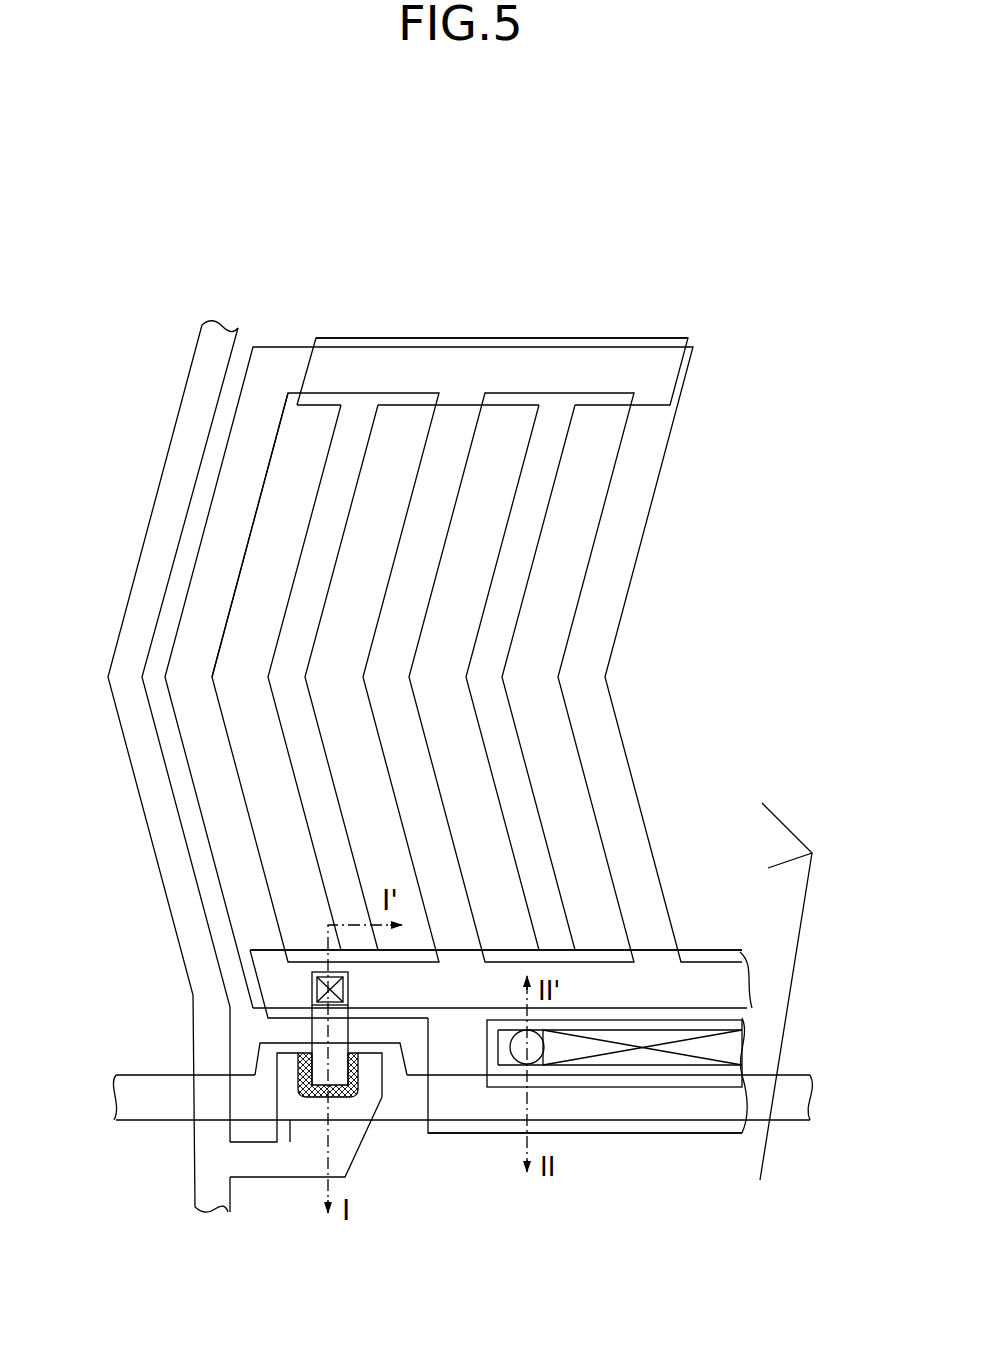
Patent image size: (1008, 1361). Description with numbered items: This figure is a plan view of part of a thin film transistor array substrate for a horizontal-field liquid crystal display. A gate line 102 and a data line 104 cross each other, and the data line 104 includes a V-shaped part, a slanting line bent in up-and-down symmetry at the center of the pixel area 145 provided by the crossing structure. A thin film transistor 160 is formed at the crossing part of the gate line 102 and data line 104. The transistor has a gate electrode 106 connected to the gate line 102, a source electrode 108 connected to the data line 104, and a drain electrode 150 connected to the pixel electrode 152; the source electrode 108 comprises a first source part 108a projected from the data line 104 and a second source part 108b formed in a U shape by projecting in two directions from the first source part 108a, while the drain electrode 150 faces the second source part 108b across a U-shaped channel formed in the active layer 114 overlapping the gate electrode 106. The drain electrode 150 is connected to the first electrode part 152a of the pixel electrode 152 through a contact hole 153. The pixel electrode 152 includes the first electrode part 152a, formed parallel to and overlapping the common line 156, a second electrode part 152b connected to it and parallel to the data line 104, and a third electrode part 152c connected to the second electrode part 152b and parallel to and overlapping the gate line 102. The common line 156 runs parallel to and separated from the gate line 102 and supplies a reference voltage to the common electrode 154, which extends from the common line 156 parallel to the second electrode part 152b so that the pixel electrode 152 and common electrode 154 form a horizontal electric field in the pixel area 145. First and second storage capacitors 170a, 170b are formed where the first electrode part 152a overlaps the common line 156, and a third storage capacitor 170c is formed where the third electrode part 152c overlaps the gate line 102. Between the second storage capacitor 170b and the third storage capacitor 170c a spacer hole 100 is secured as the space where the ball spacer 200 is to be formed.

The spacer hole 100 is at (752, 1047).
The gate line 102 is at (795, 1107).
The data line 104 is at (180, 470).
The gate electrode 106 is at (267, 1048).
The source electrode 108 is at (289, 1168).
The first source part 108a is at (300, 1162).
The second source part 108b is at (290, 1072).
The active layer 114 is at (356, 1095).
The pixel area 145 is at (222, 750).
The drain electrode 150 is at (333, 1040).
The pixel electrode 152 is at (816, 991).
The first electrode part 152a is at (602, 337).
The second electrode part 152b is at (510, 790).
The third electrode part 152c is at (713, 1133).
The contact hole 153 is at (325, 972).
The common electrode 154 is at (587, 673).
The common line 156 is at (692, 376).
The thin film transistor 160 is at (298, 988).
The first storage capacitor 170a is at (489, 330).
The second storage capacitor 170b is at (724, 946).
The third storage capacitor 170c is at (596, 1124).
The ball spacer 200 is at (520, 1057).